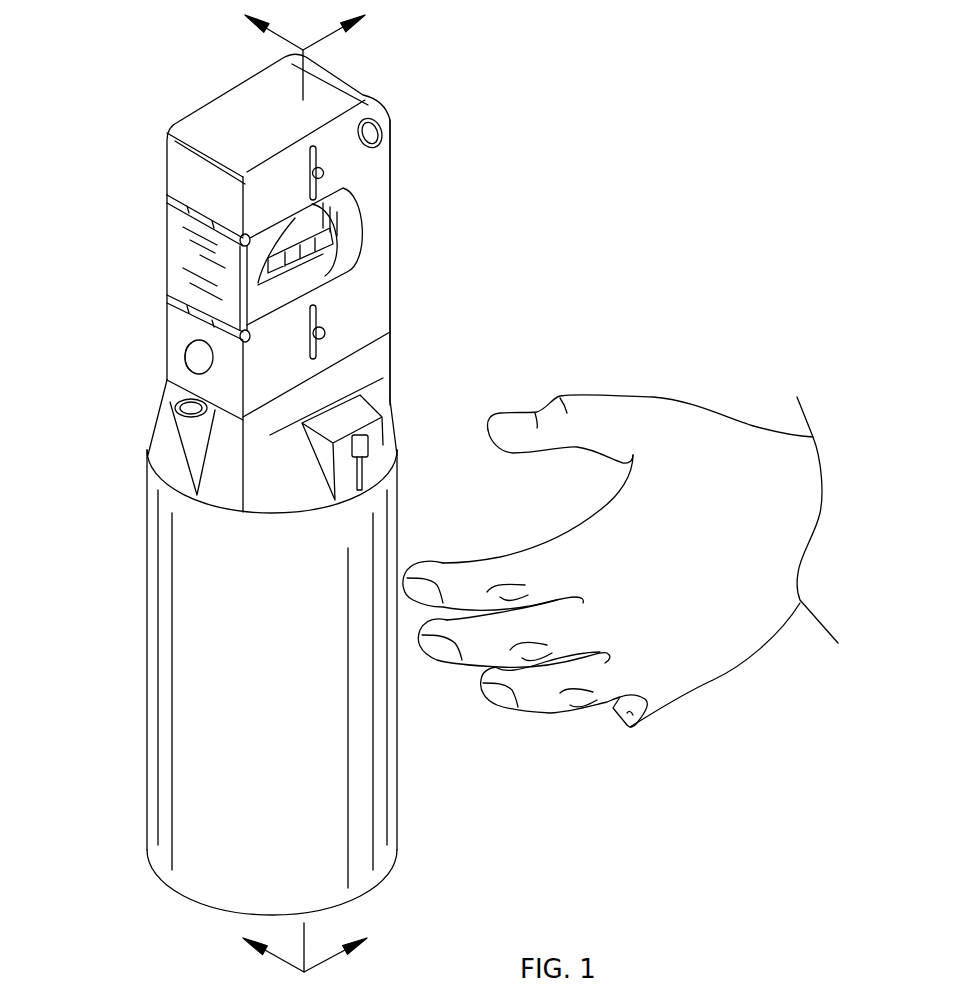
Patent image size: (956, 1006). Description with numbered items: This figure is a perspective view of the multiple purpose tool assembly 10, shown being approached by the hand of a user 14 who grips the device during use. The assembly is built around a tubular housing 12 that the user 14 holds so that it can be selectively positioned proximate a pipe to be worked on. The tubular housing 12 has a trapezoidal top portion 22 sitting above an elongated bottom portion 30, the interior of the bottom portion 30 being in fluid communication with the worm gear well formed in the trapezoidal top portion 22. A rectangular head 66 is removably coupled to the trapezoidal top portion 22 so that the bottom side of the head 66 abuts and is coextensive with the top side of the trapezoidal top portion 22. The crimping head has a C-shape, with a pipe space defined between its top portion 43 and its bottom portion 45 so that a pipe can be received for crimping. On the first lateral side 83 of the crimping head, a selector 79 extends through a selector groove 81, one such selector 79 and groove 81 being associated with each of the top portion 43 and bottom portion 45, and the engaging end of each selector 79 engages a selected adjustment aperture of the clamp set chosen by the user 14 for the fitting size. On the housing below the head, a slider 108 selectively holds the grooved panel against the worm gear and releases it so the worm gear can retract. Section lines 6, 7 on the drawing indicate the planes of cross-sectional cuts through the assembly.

The section line for FIG. 6 is at (260, 493).
The section line for FIG. 7 is at (348, 490).
The multiple purpose tool assembly 10 is at (128, 114).
The tubular housing 12 is at (136, 621).
The user 14 is at (618, 403).
The trapezoidal top portion 22 is at (137, 395).
The bottom portion 30 is at (136, 692).
The top portion of the crimping head 43 is at (148, 165).
The bottom portion of the crimping head 45 is at (147, 325).
The head 66 is at (416, 117).
The selector 79 is at (323, 173).
The selector groove 81 is at (315, 148).
The first lateral side 83 is at (382, 247).
The slider 108 is at (368, 445).